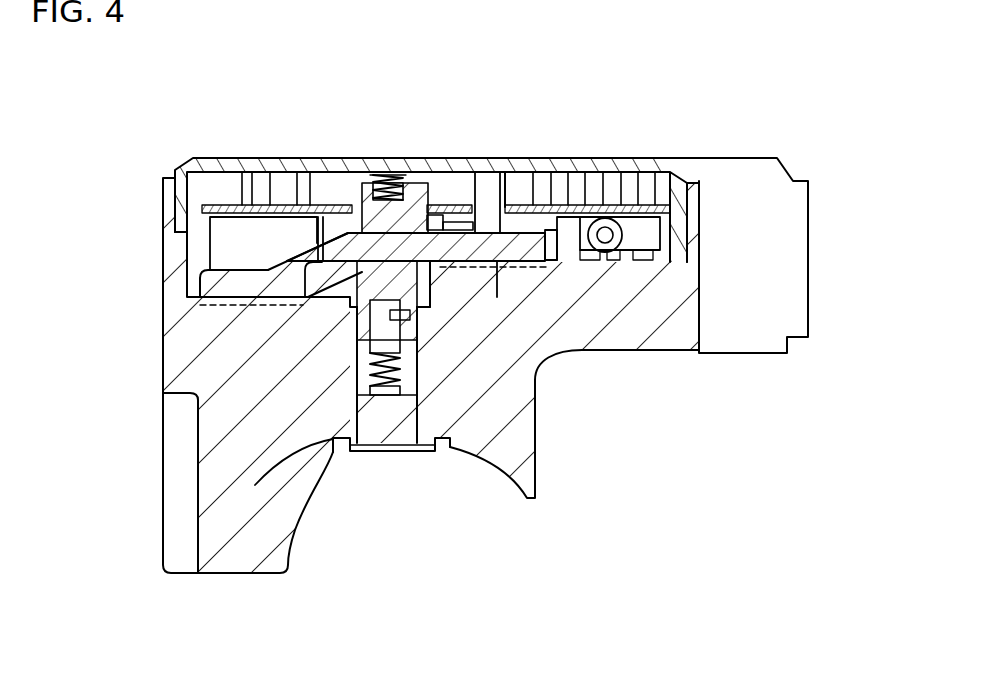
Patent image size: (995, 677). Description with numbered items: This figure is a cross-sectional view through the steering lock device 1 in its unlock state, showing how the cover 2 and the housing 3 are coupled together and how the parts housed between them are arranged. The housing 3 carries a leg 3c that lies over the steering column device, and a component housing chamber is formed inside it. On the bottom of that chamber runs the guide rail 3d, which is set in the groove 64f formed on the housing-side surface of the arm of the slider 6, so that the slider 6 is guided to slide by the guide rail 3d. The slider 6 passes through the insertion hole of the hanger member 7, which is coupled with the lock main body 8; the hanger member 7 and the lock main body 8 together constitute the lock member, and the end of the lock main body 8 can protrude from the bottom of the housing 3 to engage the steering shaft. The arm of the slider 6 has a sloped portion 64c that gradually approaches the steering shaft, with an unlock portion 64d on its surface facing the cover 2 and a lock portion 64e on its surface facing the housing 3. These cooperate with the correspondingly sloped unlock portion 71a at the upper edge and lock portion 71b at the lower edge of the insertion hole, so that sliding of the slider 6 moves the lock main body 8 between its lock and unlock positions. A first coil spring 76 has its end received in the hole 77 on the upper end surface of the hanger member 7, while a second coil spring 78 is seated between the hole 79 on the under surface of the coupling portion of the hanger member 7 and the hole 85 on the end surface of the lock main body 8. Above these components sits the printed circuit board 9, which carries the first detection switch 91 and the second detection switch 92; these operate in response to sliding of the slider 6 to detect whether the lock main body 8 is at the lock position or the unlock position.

The steering lock device 1 is at (135, 137).
The cover 2 is at (618, 158).
The housing 3 is at (822, 256).
The leg 3c is at (200, 537).
The guide rail 3d is at (235, 300).
The slider 6 is at (505, 215).
The hanger member 7 is at (420, 233).
The lock main body 8 is at (360, 452).
The printed circuit board 9 is at (232, 158).
The sloped portion 64c is at (310, 262).
The unlock portion 64d is at (286, 158).
The lock portion 64e is at (500, 275).
The groove 64f is at (213, 218).
The unlock portion 71a is at (490, 215).
The lock portion 71b is at (362, 195).
The first coil spring 76 is at (395, 183).
The hole 77 is at (380, 207).
The second coil spring 78 is at (402, 370).
The hole 79 is at (405, 307).
The hole 85 is at (405, 397).
The first detection switch 91 is at (650, 222).
The second detection switch 92 is at (565, 218).